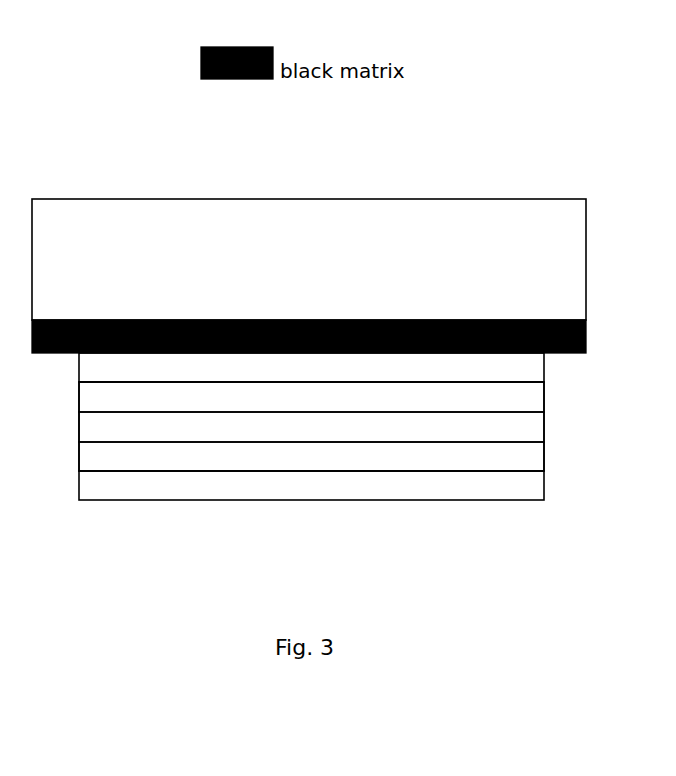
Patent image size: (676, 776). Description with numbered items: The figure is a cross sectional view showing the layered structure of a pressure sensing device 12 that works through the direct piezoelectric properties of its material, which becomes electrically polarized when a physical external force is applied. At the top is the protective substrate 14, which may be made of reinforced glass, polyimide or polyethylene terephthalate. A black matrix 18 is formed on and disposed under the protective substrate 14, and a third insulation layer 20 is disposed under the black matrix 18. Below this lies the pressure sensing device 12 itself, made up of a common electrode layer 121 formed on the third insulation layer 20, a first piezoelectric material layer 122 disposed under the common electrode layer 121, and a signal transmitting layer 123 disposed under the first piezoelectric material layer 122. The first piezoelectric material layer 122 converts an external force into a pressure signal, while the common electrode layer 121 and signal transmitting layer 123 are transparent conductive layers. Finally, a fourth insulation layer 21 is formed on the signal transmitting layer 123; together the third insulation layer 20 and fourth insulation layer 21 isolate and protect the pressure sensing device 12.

The protective substrate 14 is at (260, 252).
The black matrix 18 is at (163, 322).
The third insulation layer 20 is at (310, 375).
The pressure sensing device 12 is at (390, 557).
The common electrode layer 121 is at (351, 394).
The first piezoelectric material layer 122 is at (279, 427).
The signal transmitting layer 123 is at (198, 453).
The fourth insulation layer 21 is at (442, 488).